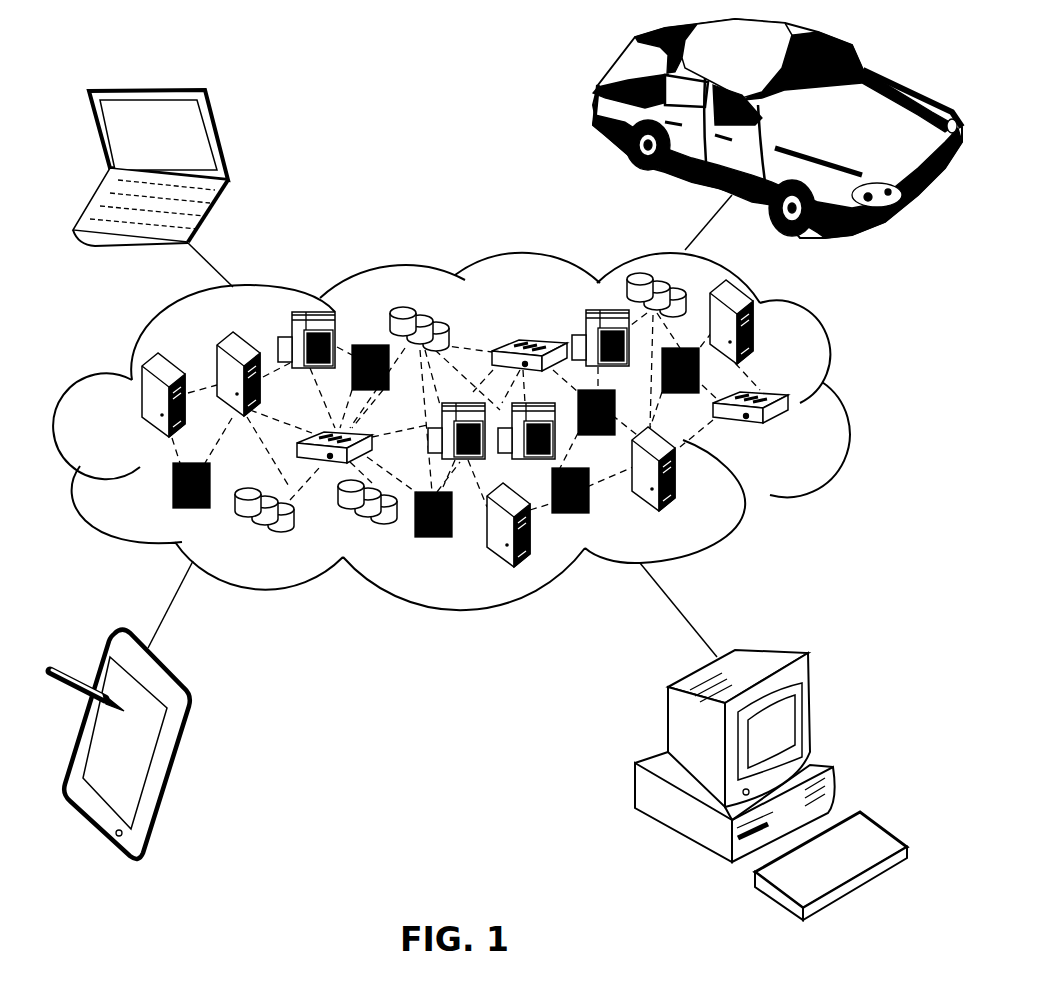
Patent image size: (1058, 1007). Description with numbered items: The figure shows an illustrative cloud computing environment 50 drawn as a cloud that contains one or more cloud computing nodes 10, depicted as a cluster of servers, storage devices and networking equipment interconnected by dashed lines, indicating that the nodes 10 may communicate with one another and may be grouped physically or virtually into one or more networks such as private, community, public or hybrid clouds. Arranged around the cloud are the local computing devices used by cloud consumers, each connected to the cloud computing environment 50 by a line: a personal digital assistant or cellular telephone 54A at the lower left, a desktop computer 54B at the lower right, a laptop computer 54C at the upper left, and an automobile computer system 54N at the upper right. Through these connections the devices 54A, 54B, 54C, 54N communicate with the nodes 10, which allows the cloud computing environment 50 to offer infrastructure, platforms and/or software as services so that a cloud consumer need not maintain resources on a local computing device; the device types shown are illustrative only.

The cloud computing nodes 10 is at (800, 434).
The cloud computing environment 50 is at (843, 403).
The personal digital assistant or cellular telephone 54A is at (183, 733).
The desktop computer 54B is at (777, 652).
The laptop computer 54C is at (220, 137).
The automobile computer system 54N is at (596, 110).